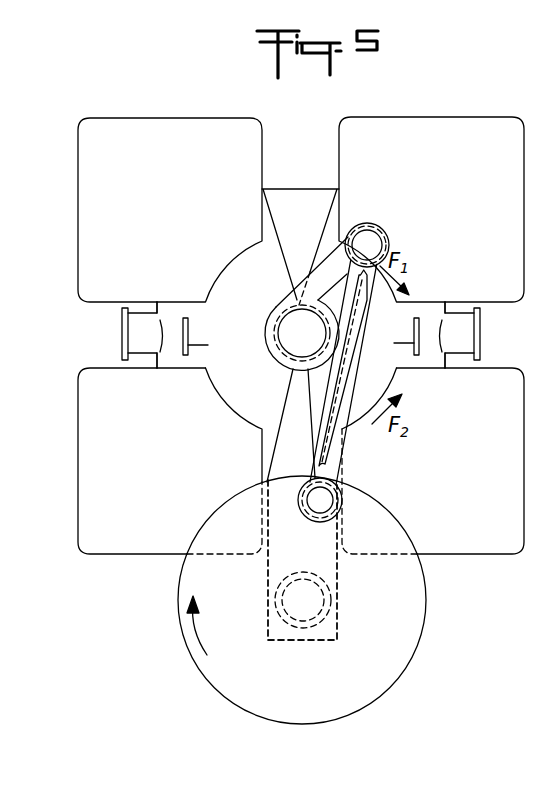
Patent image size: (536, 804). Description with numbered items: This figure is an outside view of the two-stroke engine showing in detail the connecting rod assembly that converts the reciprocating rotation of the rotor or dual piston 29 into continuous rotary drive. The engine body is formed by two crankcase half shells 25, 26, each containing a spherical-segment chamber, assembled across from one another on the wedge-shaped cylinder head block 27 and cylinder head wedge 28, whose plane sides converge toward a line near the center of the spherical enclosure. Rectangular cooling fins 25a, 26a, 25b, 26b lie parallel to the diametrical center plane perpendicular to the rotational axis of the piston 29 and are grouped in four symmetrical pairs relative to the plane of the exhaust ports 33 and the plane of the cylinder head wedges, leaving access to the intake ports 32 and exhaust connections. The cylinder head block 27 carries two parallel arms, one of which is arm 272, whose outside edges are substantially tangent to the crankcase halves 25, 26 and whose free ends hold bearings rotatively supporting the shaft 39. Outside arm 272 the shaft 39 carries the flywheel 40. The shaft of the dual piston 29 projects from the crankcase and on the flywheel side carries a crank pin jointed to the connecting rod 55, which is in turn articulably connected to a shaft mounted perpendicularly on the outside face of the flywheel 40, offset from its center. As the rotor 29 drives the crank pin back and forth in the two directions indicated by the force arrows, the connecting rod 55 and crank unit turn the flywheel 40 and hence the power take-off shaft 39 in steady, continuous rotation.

The cooling fin 25a is at (166, 218).
The cooling fin 26a is at (442, 214).
The cooling fin 25b is at (171, 472).
The cooling fin 26b is at (448, 474).
The cylinder head wedge 28 is at (304, 222).
The rotor or dual piston 29 is at (307, 346).
The cylinder head block 27 is at (302, 451).
The arm 272 is at (340, 608).
The shaft 39 is at (302, 620).
The flywheel 40 is at (400, 650).
The connecting rod 55 is at (340, 453).
The crankcase half shell 25 is at (188, 323).
The crankcase half shell 26 is at (414, 323).
The intake port 32 is at (182, 357).
The exhaust port 33 is at (122, 337).